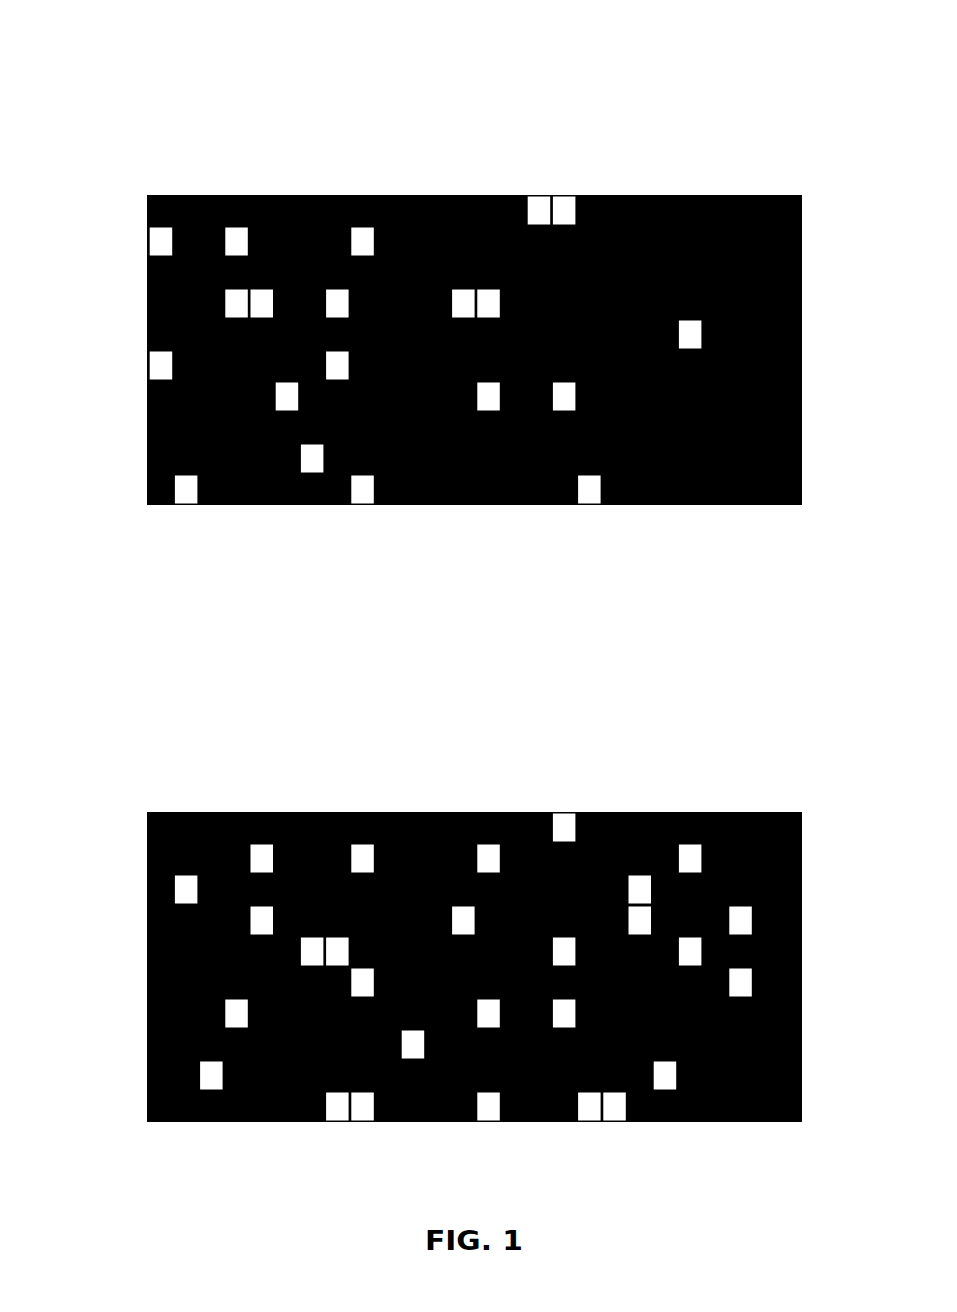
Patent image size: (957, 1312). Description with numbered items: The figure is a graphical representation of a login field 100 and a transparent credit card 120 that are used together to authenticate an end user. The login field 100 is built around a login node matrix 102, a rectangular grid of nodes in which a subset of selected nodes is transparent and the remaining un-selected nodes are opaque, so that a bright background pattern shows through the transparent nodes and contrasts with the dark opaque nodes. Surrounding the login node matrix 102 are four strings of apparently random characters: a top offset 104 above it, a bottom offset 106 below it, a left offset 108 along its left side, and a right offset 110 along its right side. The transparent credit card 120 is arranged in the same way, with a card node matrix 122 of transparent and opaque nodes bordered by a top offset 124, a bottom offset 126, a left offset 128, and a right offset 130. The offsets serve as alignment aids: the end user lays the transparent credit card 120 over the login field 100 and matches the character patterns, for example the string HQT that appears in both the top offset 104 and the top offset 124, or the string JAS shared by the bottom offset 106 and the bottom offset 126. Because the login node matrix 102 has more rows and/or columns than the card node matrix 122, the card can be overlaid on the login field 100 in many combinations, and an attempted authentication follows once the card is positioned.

The login field 100 is at (353, 96).
The login node matrix 102 is at (792, 181).
The top offset 104 is at (795, 135).
The bottom offset 106 is at (795, 551).
The left offset 108 is at (103, 187).
The right offset 110 is at (829, 187).
The transparent credit card 120 is at (352, 713).
The card node matrix 122 is at (792, 798).
The top offset 124 is at (795, 752).
The bottom offset 126 is at (795, 1168).
The left offset 128 is at (103, 804).
The right offset 130 is at (829, 804).